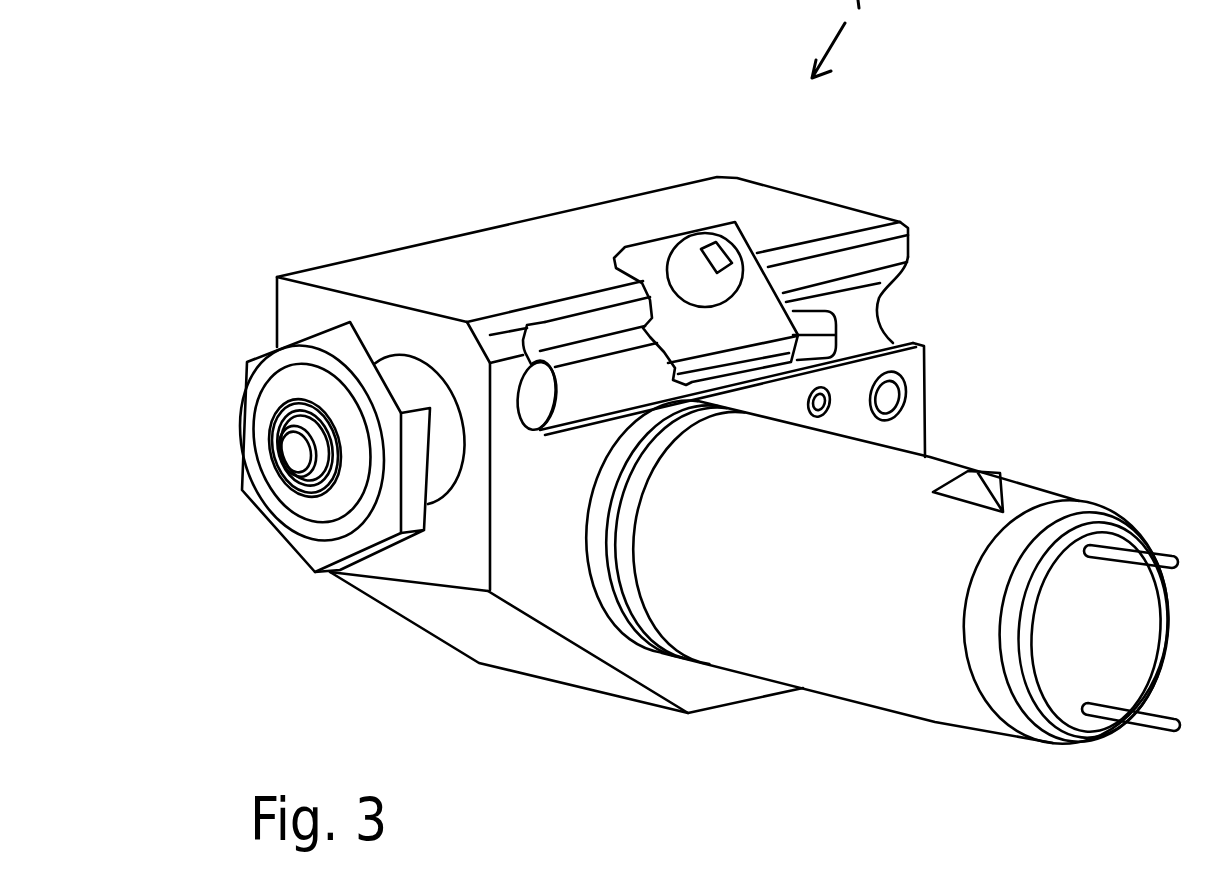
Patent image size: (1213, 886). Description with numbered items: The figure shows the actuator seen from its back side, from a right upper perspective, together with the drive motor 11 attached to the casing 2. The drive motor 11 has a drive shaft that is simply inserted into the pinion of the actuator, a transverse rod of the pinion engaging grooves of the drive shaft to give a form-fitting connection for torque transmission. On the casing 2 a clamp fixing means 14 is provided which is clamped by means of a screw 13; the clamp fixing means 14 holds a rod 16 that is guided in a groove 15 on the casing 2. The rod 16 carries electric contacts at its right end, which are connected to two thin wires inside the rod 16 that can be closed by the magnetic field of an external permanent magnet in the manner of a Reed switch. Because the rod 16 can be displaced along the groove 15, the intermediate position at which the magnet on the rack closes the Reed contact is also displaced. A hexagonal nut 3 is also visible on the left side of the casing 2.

The casing 2 is at (868, 207).
The hex nut 3 is at (293, 470).
The drive motor 11 is at (922, 697).
The screw 13 is at (683, 252).
The clamp fixing means 14 is at (727, 232).
The groove 15 is at (888, 307).
The rod 16 is at (595, 372).